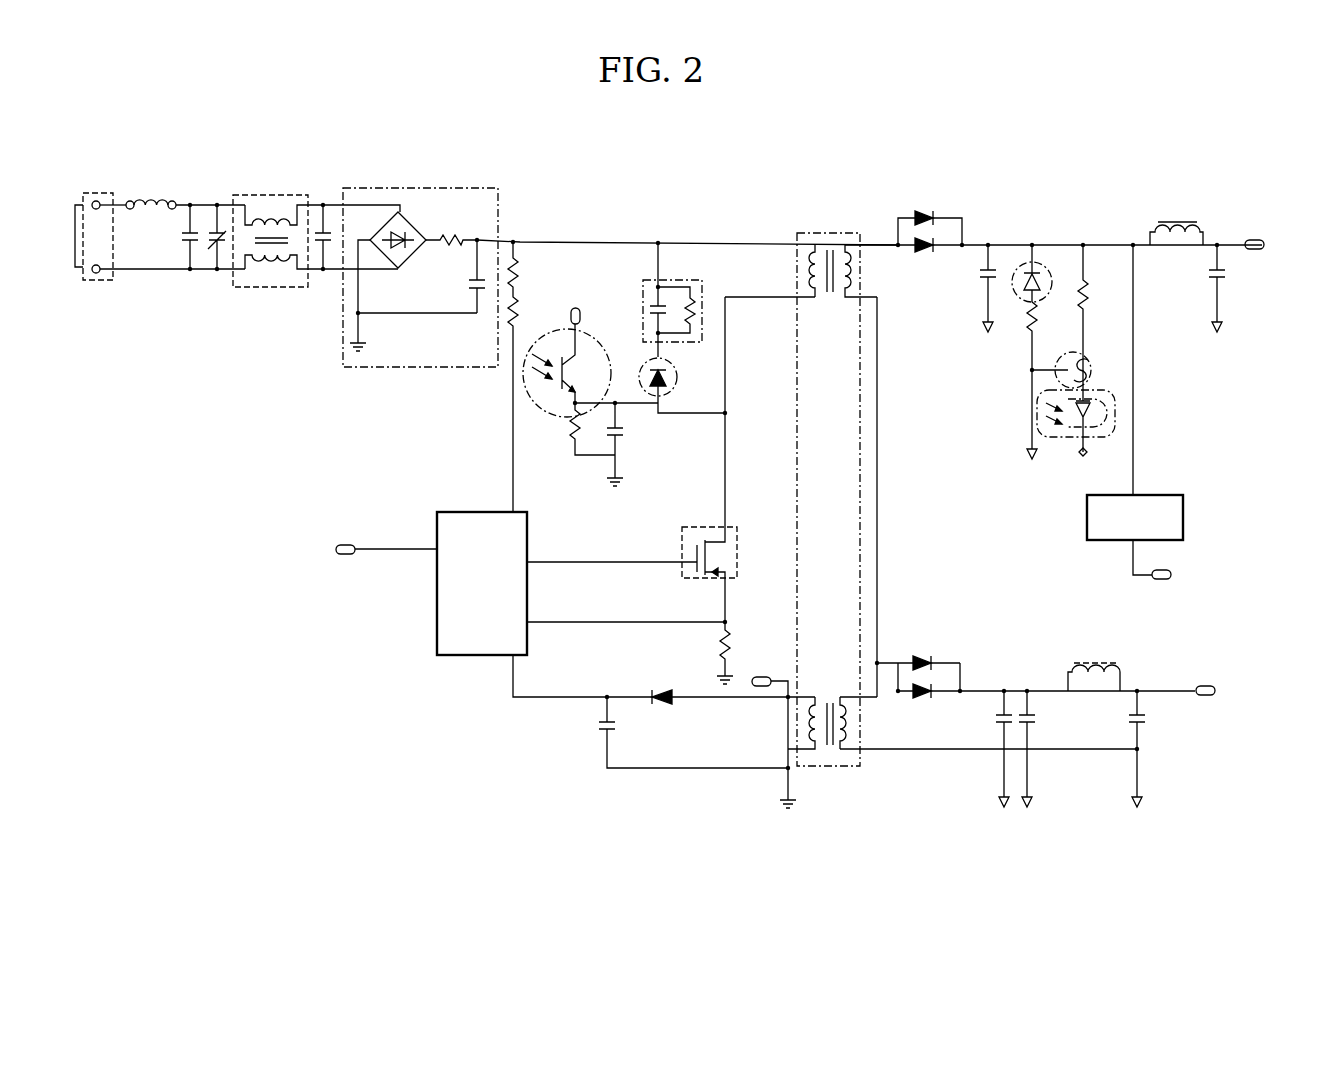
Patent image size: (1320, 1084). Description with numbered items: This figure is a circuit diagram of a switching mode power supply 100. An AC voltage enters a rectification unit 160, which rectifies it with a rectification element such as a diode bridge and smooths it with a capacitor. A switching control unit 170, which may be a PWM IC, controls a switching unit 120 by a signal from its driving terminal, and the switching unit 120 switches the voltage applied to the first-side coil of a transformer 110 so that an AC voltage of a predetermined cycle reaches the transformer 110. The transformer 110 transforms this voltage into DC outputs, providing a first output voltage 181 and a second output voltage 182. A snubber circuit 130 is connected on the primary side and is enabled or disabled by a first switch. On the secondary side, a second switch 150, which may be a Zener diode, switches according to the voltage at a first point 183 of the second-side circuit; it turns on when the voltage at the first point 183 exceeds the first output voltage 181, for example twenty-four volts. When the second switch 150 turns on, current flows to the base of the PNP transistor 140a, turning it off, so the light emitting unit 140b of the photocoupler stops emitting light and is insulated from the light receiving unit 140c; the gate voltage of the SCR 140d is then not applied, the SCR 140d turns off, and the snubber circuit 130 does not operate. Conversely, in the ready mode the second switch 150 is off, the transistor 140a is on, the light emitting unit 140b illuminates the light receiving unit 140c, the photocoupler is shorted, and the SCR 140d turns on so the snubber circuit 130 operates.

The switching mode power supply 100 is at (1153, 172).
The transformer 110 is at (823, 232).
The switching unit 120 is at (697, 525).
The snubber circuit 130 is at (683, 281).
The transistor 140a is at (1092, 364).
The light emitting unit 140b is at (1102, 438).
The light receiving unit 140c is at (547, 410).
The SCR 140d is at (676, 400).
The second switch 150 is at (1042, 262).
The rectification unit 160 is at (432, 189).
The switching control unit 170 is at (450, 510).
The first output voltage 181 is at (1247, 234).
The second output voltage 182 is at (1175, 692).
The first point 183 is at (1030, 240).